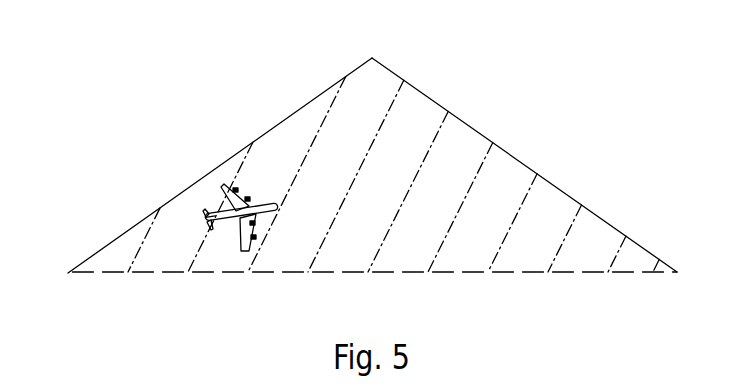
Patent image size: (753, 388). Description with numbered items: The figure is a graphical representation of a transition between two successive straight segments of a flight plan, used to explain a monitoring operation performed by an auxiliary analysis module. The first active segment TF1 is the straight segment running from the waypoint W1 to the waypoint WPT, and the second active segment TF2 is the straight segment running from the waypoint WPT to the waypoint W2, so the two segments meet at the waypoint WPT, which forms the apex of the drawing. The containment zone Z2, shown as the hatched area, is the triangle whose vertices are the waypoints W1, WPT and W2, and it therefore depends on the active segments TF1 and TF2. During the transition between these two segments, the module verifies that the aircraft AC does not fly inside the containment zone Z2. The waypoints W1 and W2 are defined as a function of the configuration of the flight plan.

The waypoint WPT is at (373, 41).
The first active segment TF1 is at (261, 137).
The second active segment TF2 is at (487, 138).
The waypoint W1 is at (49, 275).
The waypoint W2 is at (698, 275).
The aircraft AC is at (264, 216).
The containment zone Z2 is at (425, 243).